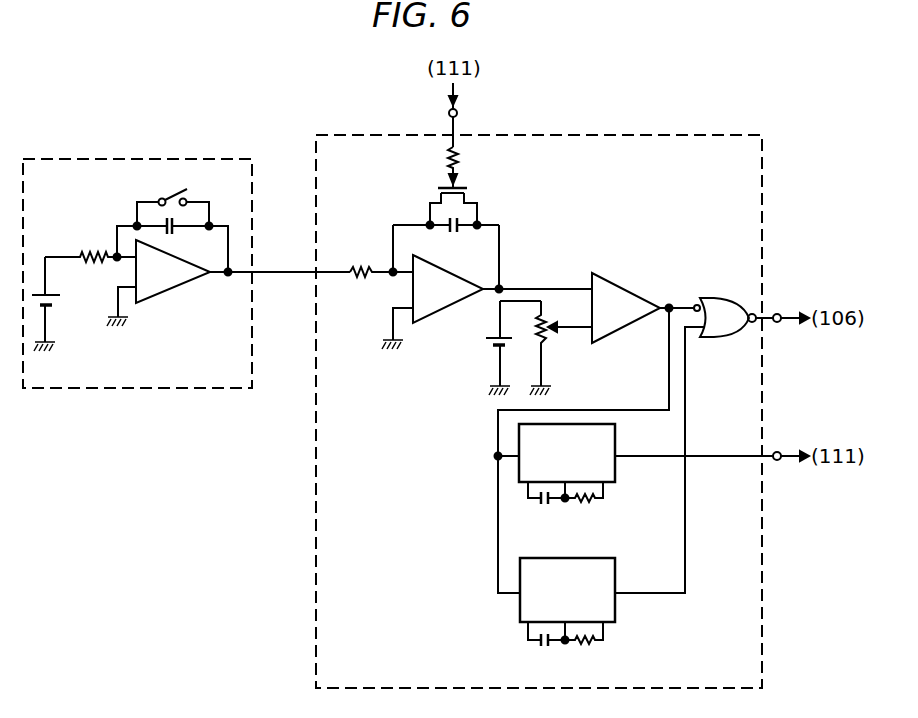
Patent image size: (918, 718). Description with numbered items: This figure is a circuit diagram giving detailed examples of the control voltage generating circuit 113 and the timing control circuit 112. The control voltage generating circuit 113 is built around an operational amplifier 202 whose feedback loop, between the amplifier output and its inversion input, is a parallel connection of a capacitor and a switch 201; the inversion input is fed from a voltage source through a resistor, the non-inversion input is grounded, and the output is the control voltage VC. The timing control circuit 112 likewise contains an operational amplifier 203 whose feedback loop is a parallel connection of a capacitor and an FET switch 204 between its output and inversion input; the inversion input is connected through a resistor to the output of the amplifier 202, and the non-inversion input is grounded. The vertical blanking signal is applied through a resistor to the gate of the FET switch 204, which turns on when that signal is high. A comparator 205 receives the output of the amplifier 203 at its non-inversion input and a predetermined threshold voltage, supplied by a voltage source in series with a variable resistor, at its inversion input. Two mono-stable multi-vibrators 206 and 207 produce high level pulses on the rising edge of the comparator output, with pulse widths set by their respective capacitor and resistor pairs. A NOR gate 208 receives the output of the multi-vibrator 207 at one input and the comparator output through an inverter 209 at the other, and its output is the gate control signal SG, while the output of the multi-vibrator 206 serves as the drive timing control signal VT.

The control voltage generating circuit 113 is at (251, 144).
The timing control circuit 112 is at (711, 113).
The switch 201 is at (189, 198).
The operational amplifier 202 is at (170, 292).
The operational amplifier 203 is at (448, 313).
The FET switch 204 is at (469, 187).
The comparator 205 is at (629, 291).
The mono-stable multi-vibrator 206 is at (616, 432).
The mono-stable multi-vibrator 207 is at (618, 570).
The NOR gate 208 is at (730, 291).
The inverter 209 is at (694, 305).